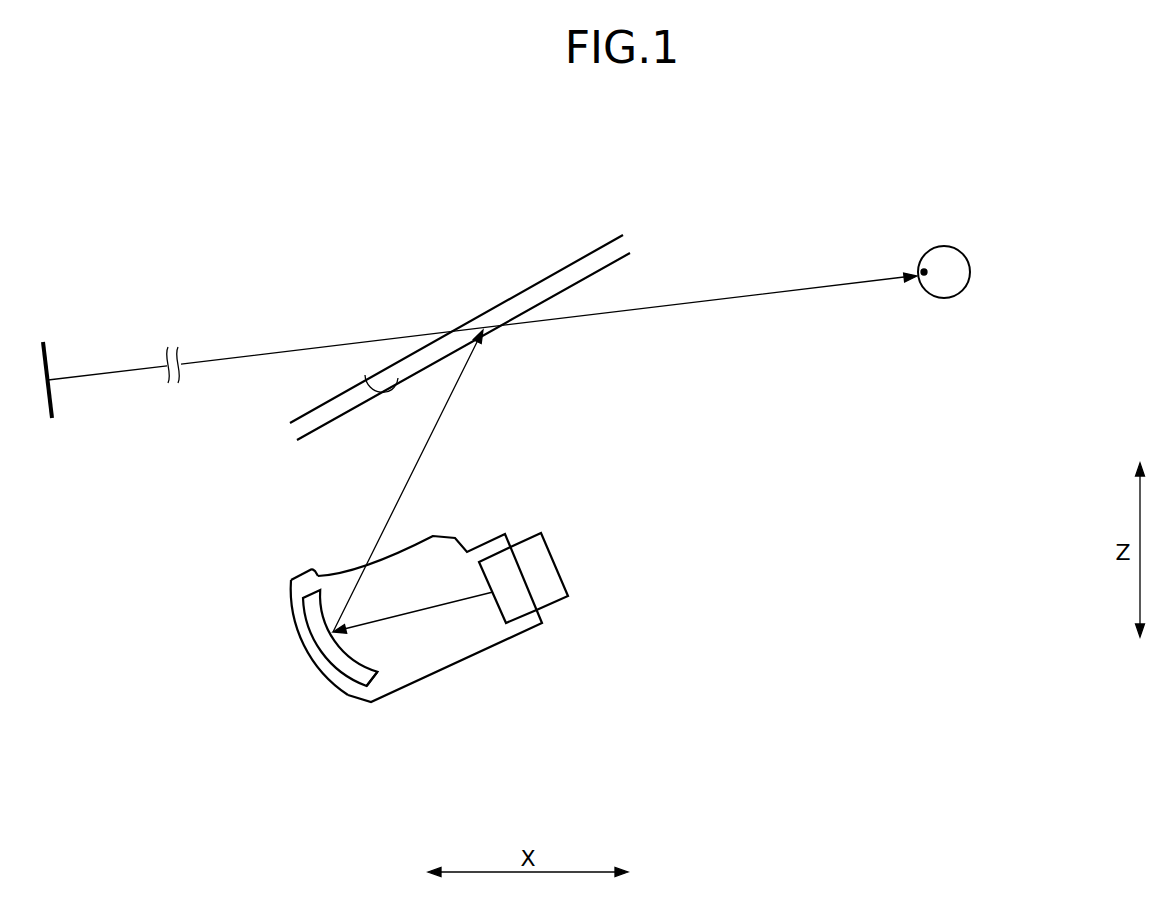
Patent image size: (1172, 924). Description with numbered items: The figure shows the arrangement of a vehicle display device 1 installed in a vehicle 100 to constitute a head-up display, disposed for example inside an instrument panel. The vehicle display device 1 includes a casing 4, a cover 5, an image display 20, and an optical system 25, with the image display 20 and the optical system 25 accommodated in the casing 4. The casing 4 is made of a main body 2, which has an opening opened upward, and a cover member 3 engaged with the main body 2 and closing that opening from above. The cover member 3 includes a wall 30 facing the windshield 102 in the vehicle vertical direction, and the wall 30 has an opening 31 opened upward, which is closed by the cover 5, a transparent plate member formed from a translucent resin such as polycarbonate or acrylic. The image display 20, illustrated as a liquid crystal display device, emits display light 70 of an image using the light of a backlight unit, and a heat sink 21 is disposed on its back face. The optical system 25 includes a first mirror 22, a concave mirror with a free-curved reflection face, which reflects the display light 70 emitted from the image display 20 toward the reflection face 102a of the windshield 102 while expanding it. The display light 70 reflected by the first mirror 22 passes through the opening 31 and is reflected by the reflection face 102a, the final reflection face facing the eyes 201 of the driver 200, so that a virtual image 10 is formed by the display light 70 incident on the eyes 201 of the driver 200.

The vehicle 100 is at (532, 170).
The windshield 102 is at (540, 292).
The reflection face 102a is at (365, 375).
The virtual image 10 is at (48, 357).
The driver 200 is at (938, 242).
The eyes 201 is at (920, 270).
The vehicle display device 1 is at (240, 532).
The main body 2 is at (298, 632).
The cover member 3 is at (292, 578).
The casing 4 is at (268, 590).
The cover 5 is at (413, 543).
The wall 30 is at (305, 568).
The opening 31 is at (318, 573).
The first mirror 22 is at (335, 653).
The optical system 25 is at (345, 685).
The display light 70 is at (415, 620).
The image display 20 is at (513, 597).
The heat sink 21 is at (557, 587).